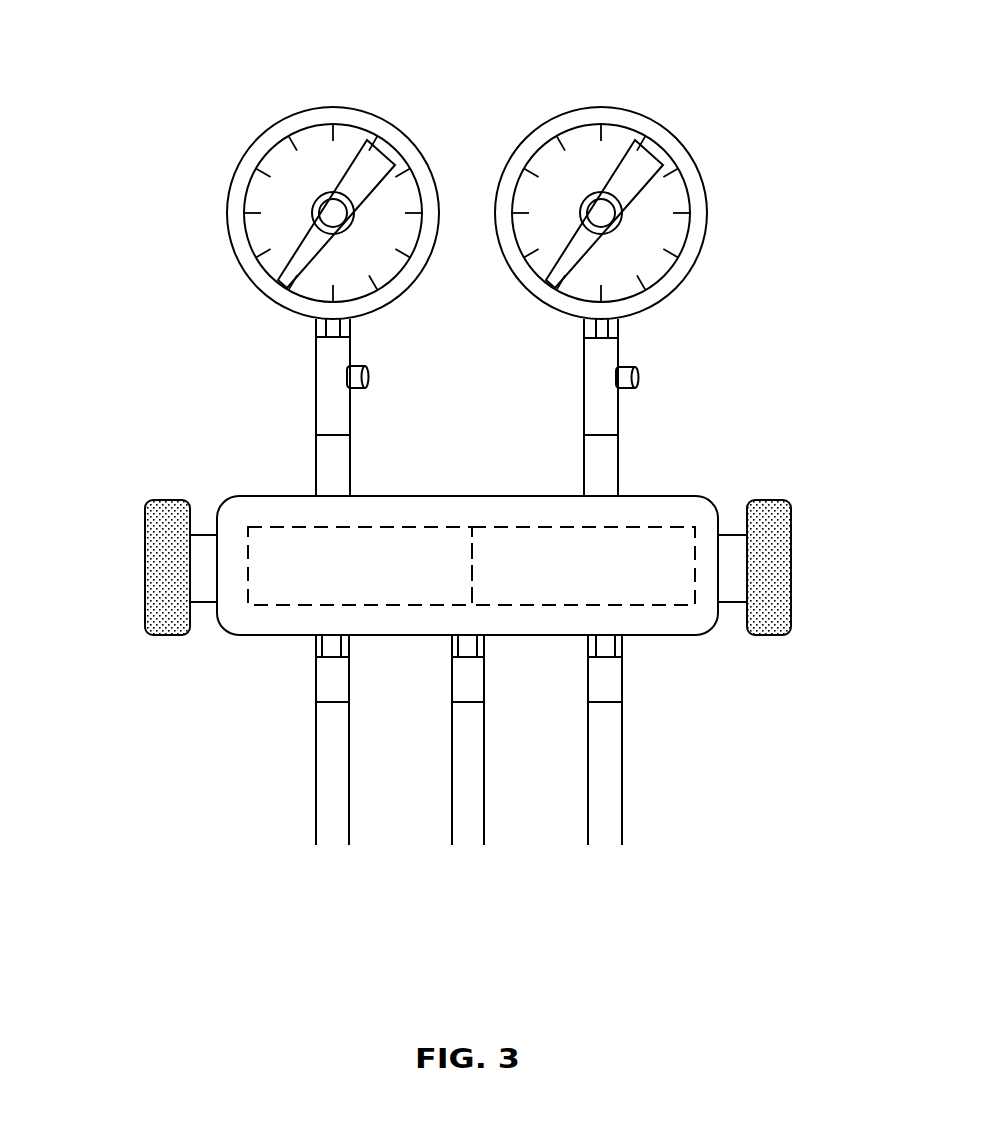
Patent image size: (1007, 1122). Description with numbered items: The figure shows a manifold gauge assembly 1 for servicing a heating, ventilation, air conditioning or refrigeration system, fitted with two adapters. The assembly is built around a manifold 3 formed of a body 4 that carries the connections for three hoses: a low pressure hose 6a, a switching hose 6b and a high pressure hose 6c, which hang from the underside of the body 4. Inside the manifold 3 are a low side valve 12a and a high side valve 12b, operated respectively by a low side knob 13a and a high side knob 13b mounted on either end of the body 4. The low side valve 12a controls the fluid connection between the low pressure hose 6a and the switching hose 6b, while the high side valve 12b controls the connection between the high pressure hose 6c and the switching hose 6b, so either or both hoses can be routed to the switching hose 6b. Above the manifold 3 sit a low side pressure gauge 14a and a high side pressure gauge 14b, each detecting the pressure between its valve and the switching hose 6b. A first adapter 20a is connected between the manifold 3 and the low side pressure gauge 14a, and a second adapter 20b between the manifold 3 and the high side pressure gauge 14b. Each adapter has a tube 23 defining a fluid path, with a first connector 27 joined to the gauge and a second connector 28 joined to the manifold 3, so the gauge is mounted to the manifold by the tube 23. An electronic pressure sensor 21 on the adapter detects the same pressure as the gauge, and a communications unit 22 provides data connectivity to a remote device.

The manifold gauge assembly 1 is at (186, 114).
The manifold 3 is at (640, 618).
The body 4 is at (489, 737).
The low pressure hose 6a is at (332, 830).
The switching hose 6b is at (472, 830).
The high pressure hose 6c is at (605, 830).
The low side valve 12a is at (263, 593).
The high side valve 12b is at (647, 573).
The low side knob 13a is at (158, 558).
The high side knob 13b is at (770, 577).
The low side pressure gauge 14a is at (340, 119).
The high side pressure gauge 14b is at (596, 119).
The first adapter 20a is at (138, 341).
The second adapter 20b is at (810, 319).
The electronic pressure sensor 21 is at (368, 377).
The communications unit 22 is at (598, 397).
The tube 23 is at (326, 371).
The first connector 27 is at (318, 323).
The second connector 28 is at (328, 444).